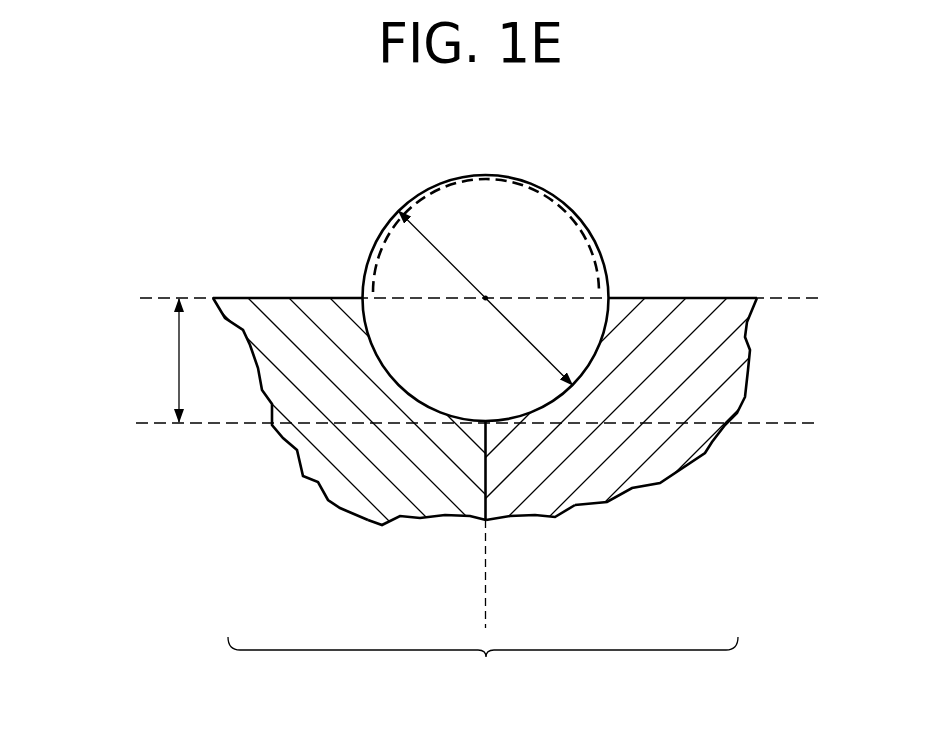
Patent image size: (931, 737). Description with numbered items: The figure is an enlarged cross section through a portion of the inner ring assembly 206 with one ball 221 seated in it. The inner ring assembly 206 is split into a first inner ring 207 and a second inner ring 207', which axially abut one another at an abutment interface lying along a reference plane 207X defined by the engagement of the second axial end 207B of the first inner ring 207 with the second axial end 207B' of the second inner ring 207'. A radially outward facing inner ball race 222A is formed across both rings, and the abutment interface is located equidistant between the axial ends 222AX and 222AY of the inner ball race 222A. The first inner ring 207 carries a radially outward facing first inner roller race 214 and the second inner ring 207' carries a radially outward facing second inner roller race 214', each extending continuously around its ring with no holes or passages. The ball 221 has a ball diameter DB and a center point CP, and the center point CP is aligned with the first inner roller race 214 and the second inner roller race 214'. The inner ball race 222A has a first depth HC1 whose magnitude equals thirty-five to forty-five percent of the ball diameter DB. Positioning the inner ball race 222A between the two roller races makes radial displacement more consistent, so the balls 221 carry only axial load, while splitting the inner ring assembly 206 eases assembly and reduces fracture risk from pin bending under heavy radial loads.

The ball 221 is at (548, 180).
The center point CP is at (487, 297).
The ball diameter DB is at (430, 240).
The axial end of the inner ball race 222AX is at (362, 297).
The axial end of the inner ball race 222AY is at (609, 297).
The inner ball race 222A is at (486, 402).
The first inner roller race 214 is at (270, 273).
The second inner roller race 214' is at (694, 277).
The first depth HC1 is at (179, 372).
The first inner ring 207 is at (347, 433).
The second inner ring 207' is at (585, 415).
The second axial end of the first inner ring 207B is at (539, 493).
The second axial end of the second inner ring 207B' is at (427, 535).
The reference plane 207X is at (486, 590).
The inner ring assembly 206 is at (483, 668).